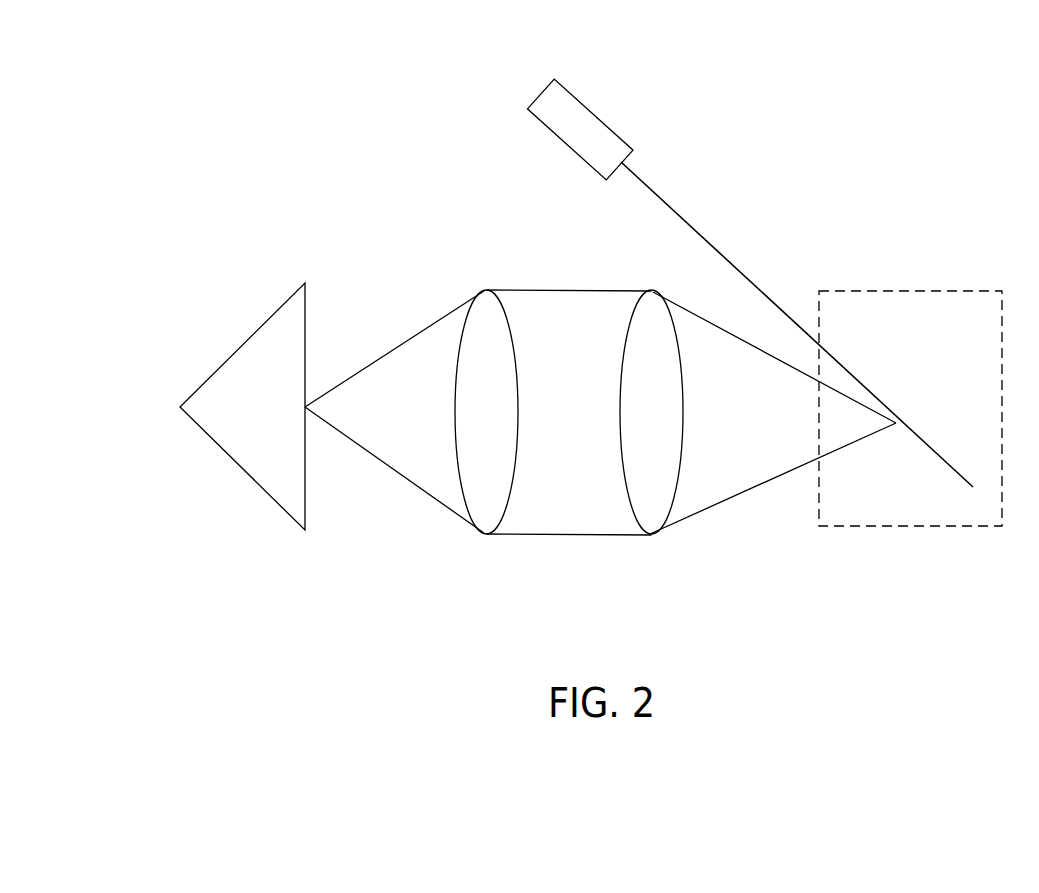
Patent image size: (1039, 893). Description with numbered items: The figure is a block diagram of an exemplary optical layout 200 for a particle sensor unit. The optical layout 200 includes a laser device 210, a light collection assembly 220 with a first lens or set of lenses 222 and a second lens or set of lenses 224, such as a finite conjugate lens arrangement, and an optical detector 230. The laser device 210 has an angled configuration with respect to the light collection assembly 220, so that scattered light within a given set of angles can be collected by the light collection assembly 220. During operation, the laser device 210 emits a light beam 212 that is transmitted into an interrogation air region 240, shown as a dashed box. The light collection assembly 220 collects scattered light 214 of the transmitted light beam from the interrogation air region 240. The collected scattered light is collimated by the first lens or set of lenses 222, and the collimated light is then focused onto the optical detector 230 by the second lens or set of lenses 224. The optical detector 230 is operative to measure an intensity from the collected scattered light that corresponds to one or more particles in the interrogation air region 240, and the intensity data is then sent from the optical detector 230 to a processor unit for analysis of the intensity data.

The optical layout 200 is at (268, 150).
The laser device 210 is at (607, 126).
The light beam 212 is at (693, 227).
The scattered light 214 is at (738, 498).
The light collection assembly 220 is at (616, 451).
The first lens or set of lenses 222 is at (686, 392).
The second lens or set of lenses 224 is at (516, 348).
The optical detector 230 is at (229, 358).
The interrogation air region 240 is at (919, 532).